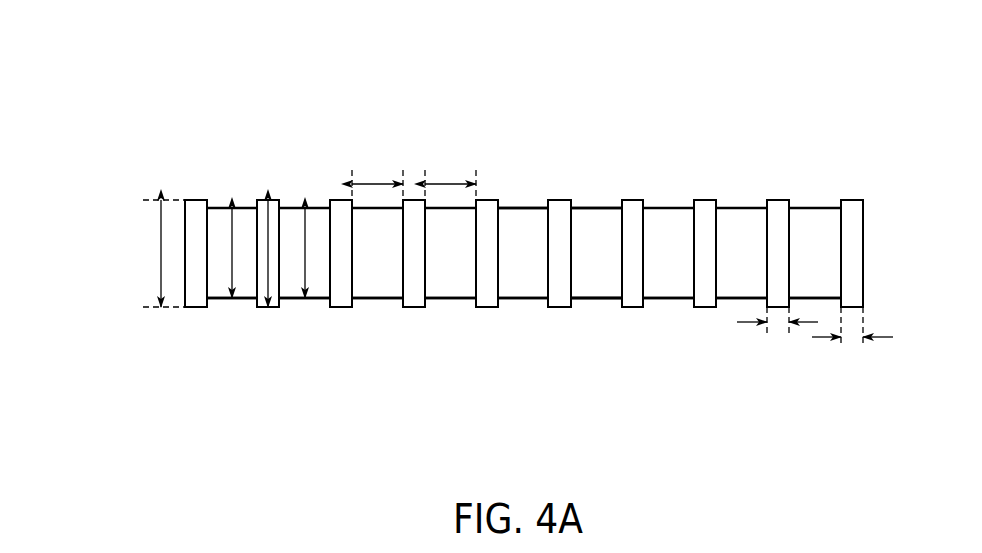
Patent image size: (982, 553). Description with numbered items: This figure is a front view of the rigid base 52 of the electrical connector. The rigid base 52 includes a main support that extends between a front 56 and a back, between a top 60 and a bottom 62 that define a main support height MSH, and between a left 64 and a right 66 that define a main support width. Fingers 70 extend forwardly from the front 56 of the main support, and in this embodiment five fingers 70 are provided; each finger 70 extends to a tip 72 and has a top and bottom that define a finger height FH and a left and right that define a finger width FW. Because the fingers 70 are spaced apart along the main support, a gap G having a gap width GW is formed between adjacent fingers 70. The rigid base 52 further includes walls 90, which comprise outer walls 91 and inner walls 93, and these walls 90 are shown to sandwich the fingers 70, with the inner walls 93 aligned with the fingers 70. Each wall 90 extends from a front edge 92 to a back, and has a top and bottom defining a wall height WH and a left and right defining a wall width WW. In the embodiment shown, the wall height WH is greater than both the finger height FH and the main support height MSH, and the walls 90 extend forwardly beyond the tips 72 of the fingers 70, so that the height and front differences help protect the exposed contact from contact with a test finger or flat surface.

The rigid base 52 is at (203, 75).
The front 56 is at (592, 220).
The top 60 is at (618, 137).
The bottom 62 is at (620, 402).
The left 64 is at (868, 257).
The right 66 is at (123, 267).
The fingers 70 is at (235, 310).
The tip 72 is at (518, 218).
The walls 90 is at (788, 130).
The outer walls 91 is at (194, 200).
The front edge 92 is at (632, 208).
The inner walls 93 is at (268, 200).
The wall height WH is at (160, 253).
The finger height FH is at (232, 208).
The main support height MSH is at (305, 208).
The finger width FW is at (380, 177).
The gap width GW is at (452, 177).
The wall width WW is at (773, 327).
The gap G is at (307, 310).